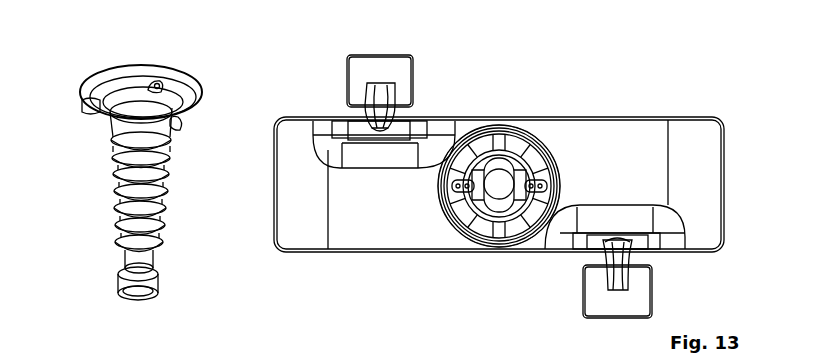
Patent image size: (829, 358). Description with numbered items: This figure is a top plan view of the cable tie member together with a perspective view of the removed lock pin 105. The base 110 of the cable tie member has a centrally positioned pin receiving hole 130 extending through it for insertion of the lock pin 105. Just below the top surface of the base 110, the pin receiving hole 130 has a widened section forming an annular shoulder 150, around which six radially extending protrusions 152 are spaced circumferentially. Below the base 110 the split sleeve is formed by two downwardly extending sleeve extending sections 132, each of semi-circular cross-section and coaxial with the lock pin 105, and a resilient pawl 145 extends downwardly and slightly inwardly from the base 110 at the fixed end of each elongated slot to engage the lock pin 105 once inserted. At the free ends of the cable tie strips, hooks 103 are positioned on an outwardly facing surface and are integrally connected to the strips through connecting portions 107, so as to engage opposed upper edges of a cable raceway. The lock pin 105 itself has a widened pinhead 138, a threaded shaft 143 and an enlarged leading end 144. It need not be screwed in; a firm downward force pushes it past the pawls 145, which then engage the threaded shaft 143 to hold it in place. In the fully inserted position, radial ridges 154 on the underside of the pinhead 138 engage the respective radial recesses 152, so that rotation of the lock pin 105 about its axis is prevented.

The hooks 103 is at (402, 72).
The lock pin 105 is at (151, 183).
The connecting portions 107 is at (368, 113).
The base 110 is at (649, 130).
The pin receiving hole 130 is at (499, 187).
The sleeve extending sections 132 is at (457, 228).
The pinhead 138 is at (203, 95).
The threaded shaft 143 is at (165, 182).
The enlarged leading end 144 is at (160, 283).
The resilient pawl 145 is at (492, 208).
The annular shoulder 150 is at (478, 142).
The radially extending protrusions 152 is at (501, 233).
The radial ridges 154 is at (90, 101).